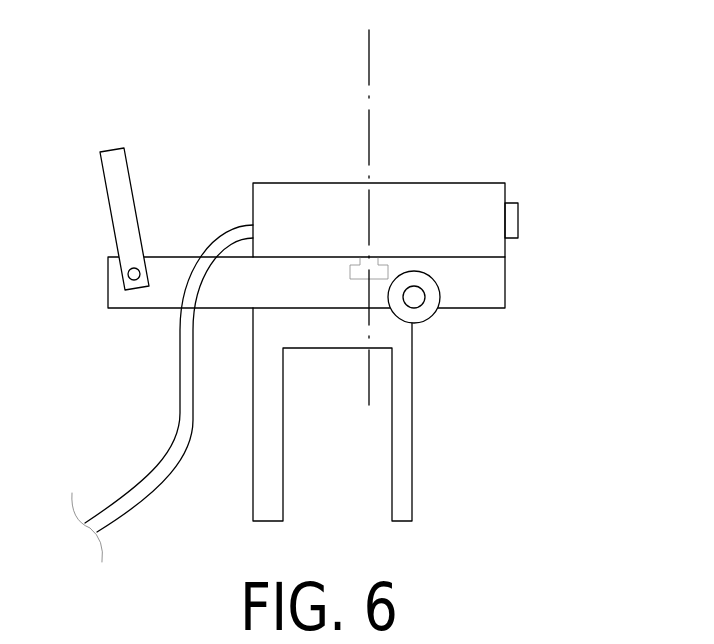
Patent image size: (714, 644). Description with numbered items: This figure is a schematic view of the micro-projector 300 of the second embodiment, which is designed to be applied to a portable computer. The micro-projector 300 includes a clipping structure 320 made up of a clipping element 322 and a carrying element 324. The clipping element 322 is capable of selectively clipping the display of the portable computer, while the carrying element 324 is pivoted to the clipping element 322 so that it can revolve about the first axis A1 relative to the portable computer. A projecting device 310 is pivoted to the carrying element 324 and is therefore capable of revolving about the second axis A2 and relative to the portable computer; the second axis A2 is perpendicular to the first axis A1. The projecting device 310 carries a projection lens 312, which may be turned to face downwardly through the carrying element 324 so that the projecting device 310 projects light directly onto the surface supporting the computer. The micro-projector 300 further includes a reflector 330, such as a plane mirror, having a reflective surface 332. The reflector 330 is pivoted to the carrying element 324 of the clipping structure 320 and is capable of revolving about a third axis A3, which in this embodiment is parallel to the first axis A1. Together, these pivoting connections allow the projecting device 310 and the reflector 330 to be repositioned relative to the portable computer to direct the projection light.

The micro-projector 300 is at (336, 289).
The projecting device 310 is at (482, 193).
The projection lens 312 is at (513, 220).
The clipping structure 320 is at (306, 280).
The clipping element 322 is at (290, 322).
The carrying element 324 is at (307, 270).
The reflector 330 is at (115, 153).
The reflective surface 332 is at (131, 182).
The first axis A1 is at (413, 295).
The second axis A2 is at (370, 60).
The third axis A3 is at (128, 274).